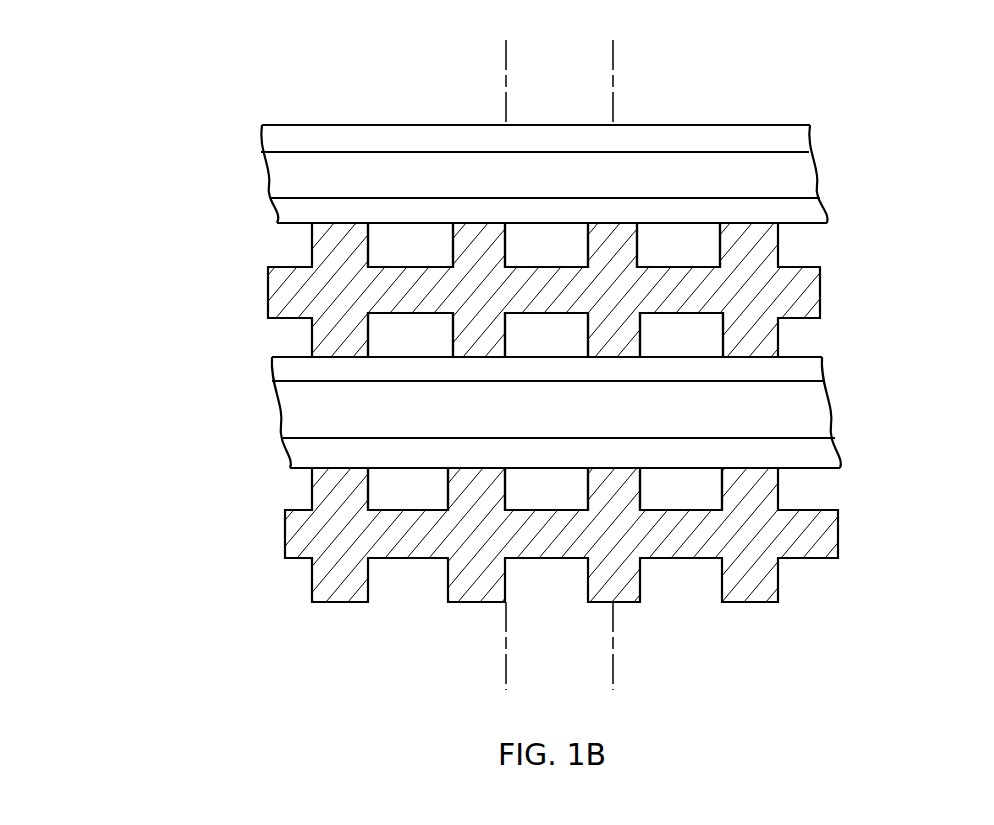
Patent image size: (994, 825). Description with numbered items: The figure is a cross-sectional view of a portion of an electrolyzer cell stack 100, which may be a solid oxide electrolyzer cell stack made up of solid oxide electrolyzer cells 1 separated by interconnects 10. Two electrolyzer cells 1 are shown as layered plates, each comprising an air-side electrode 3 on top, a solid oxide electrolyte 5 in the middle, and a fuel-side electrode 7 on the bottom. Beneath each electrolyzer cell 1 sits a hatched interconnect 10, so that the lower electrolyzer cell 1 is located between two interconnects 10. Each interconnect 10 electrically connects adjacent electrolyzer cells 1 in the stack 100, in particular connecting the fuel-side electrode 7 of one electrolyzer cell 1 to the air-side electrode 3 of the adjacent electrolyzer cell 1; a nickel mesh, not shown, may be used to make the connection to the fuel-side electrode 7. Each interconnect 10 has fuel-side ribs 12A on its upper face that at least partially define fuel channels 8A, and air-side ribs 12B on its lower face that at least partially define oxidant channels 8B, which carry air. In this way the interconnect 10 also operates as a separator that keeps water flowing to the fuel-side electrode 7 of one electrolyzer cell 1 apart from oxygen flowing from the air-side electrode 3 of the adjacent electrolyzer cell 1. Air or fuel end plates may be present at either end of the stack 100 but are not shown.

The electrolyzer cell stack 100 is at (142, 239).
The electrolyzer cell 1 is at (843, 125).
The air-side electrode 3 is at (262, 140).
The solid oxide electrolyte 5 is at (264, 180).
The fuel-side electrode 7 is at (274, 214).
The interconnect 10 is at (843, 243).
The fuel-side ribs 12A is at (312, 247).
The air-side ribs 12B is at (312, 337).
The fuel channels 8A is at (545, 366).
The oxidant channels 8B is at (545, 455).